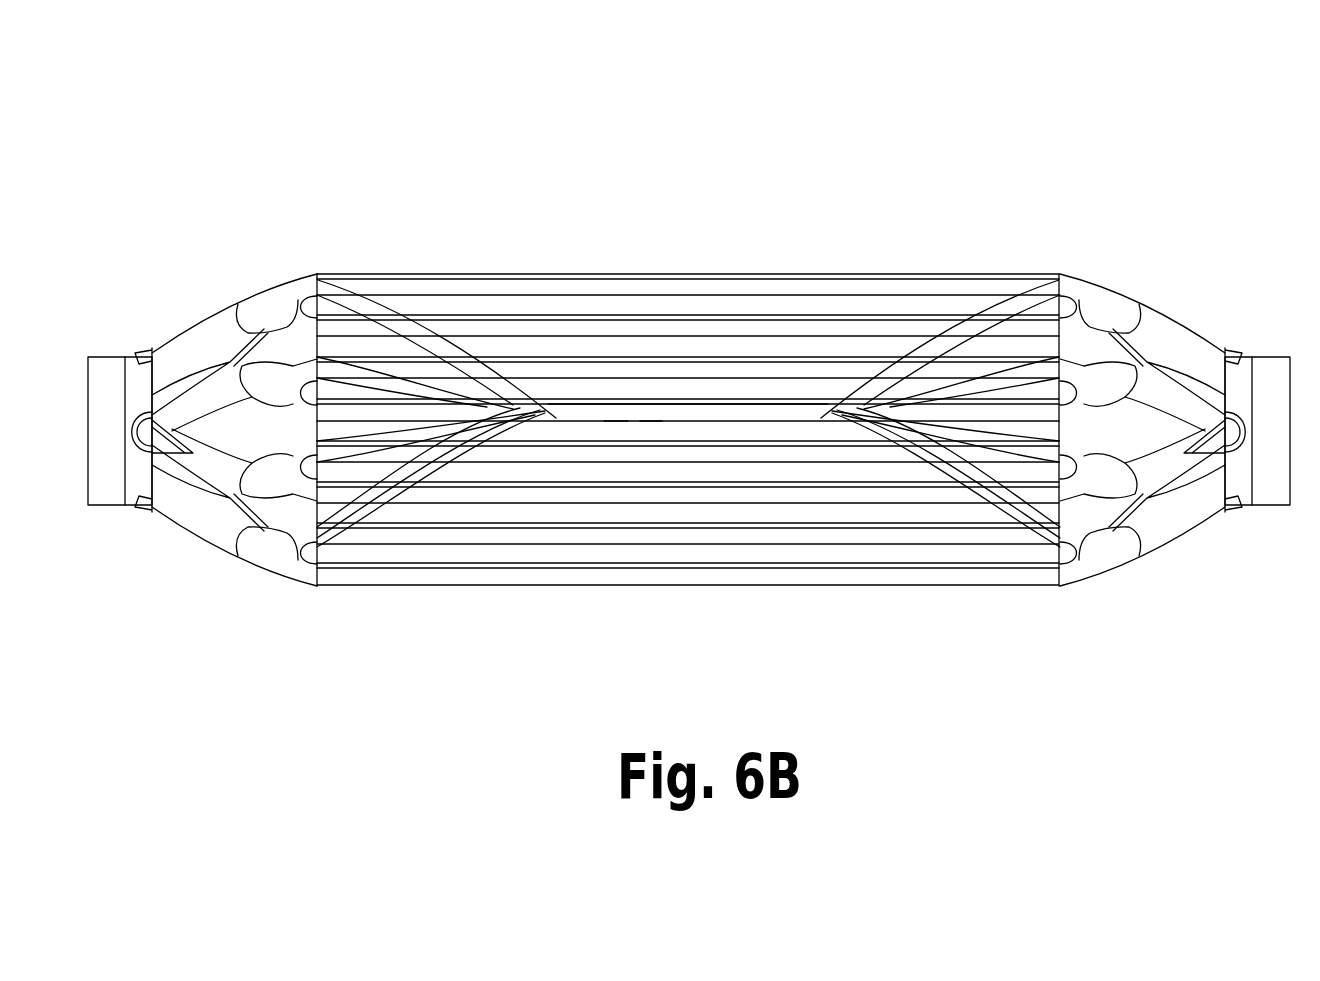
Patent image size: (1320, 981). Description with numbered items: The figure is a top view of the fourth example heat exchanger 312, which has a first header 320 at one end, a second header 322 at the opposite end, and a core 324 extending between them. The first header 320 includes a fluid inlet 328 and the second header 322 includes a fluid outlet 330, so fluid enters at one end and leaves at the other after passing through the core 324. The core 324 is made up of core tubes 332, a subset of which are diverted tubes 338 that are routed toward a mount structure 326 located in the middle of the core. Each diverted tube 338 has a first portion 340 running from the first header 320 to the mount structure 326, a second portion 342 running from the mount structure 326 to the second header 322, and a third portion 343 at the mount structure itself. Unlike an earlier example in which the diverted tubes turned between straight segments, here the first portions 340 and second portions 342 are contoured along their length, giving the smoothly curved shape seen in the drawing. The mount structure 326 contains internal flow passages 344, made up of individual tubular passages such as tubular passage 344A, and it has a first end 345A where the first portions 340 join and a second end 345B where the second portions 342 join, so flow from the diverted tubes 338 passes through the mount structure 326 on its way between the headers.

The heat exchanger 312 is at (288, 138).
The first header 320 is at (152, 298).
The second header 322 is at (1183, 300).
The core 324 is at (775, 608).
The mount structure 326 is at (690, 400).
The fluid inlet 328 is at (104, 372).
The fluid outlet 330 is at (1273, 372).
The core tubes 332 is at (465, 538).
The diverted tubes 338 is at (427, 338).
The first portions 340 is at (457, 358).
The second portions 342 is at (910, 362).
The third portions 343 is at (752, 414).
The internal flow passages 344 is at (650, 416).
The tubular passage 344A is at (617, 412).
The first end 345A is at (548, 420).
The second end 345B is at (828, 414).